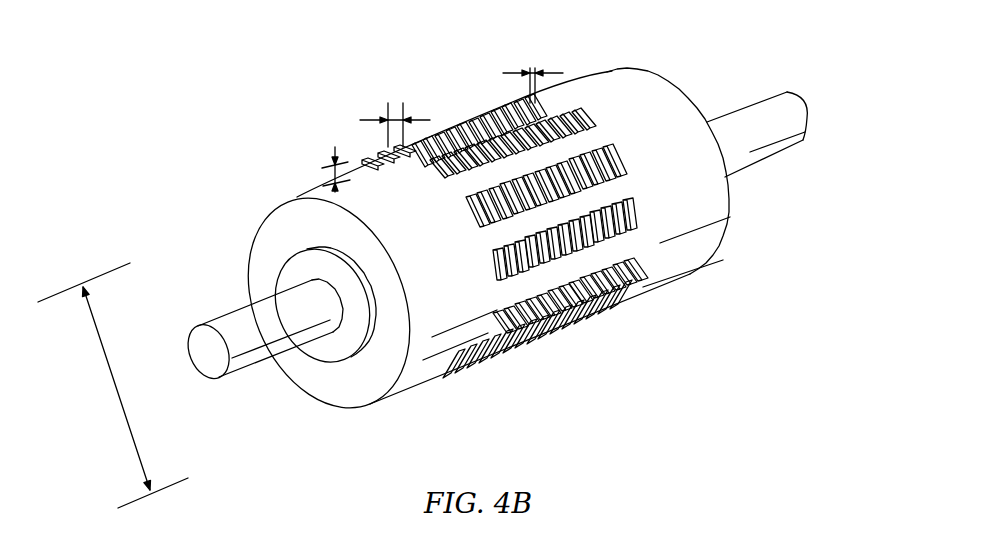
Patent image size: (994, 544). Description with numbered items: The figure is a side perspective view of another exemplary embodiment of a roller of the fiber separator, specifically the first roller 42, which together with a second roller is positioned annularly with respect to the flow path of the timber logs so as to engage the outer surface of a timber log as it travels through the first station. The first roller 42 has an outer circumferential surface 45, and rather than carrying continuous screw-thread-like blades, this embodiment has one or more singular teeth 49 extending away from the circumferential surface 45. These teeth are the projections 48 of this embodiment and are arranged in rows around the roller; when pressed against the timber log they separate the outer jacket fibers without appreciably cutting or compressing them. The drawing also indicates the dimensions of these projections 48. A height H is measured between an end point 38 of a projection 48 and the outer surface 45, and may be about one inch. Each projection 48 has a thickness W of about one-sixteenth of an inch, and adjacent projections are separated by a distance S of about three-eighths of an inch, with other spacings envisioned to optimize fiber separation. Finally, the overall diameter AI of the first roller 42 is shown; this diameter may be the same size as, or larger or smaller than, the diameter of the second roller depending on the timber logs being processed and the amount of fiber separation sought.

The first roller 42 is at (494, 220).
The outer circumferential surface 45 is at (700, 197).
The singular teeth 49 is at (566, 224).
The projections 48 is at (624, 235).
The end point 38 is at (610, 307).
The height H is at (322, 198).
The distance between projections S is at (373, 118).
The thickness W is at (518, 72).
The diameter AI is at (112, 383).